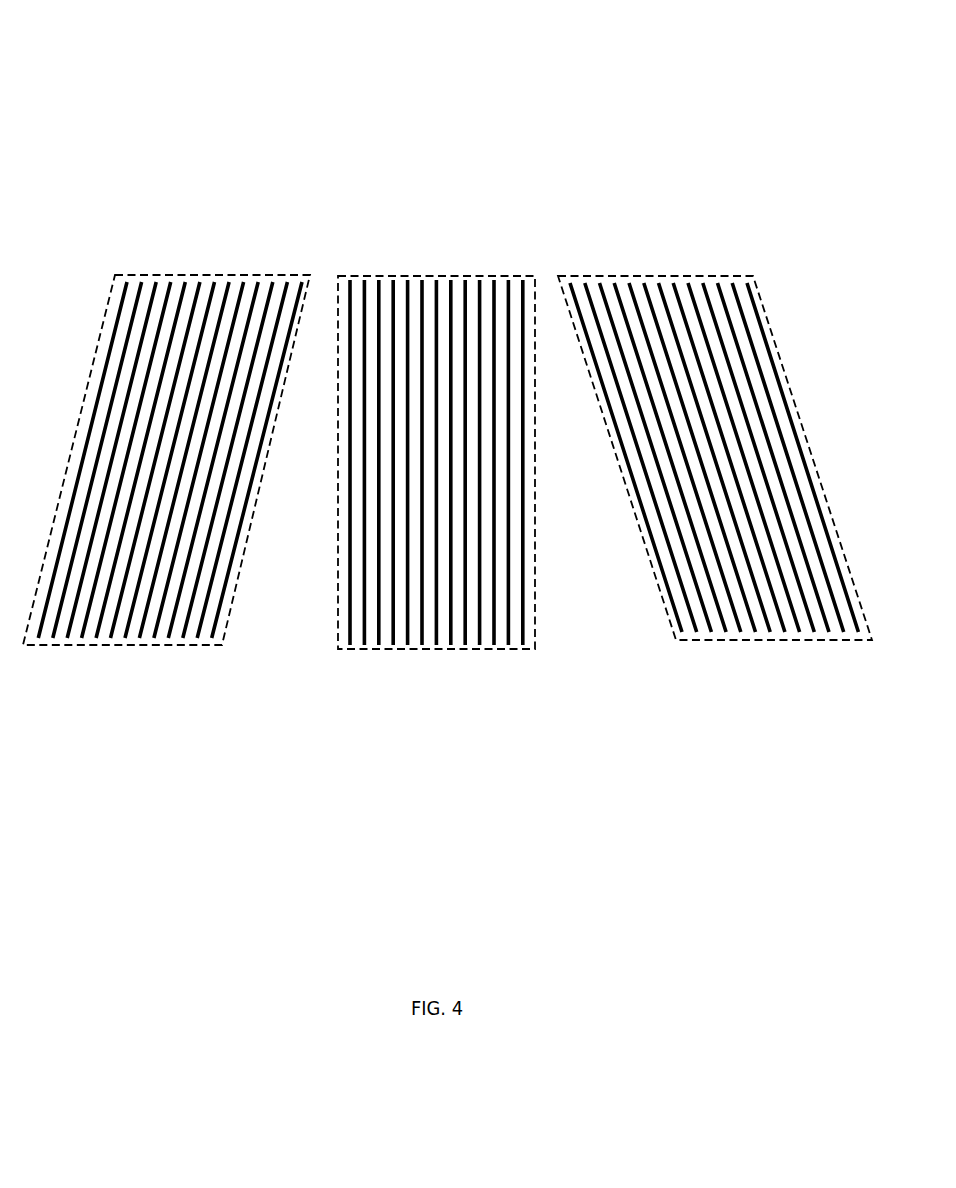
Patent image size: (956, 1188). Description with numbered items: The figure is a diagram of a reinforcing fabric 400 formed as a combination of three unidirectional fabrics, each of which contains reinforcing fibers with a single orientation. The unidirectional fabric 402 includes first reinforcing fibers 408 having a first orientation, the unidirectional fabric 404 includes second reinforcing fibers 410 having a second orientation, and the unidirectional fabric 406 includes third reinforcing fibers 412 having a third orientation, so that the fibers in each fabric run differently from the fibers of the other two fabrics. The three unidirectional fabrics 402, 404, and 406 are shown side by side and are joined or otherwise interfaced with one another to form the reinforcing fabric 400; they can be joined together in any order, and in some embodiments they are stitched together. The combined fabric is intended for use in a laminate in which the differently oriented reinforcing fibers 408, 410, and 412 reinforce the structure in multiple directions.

The reinforcing fabric 400 is at (160, 77).
The unidirectional fabric 402 is at (432, 275).
The unidirectional fabric 404 is at (668, 275).
The unidirectional fabric 406 is at (212, 275).
The first reinforcing fibers 408 is at (393, 645).
The second reinforcing fibers 410 is at (838, 632).
The third reinforcing fibers 412 is at (178, 638).